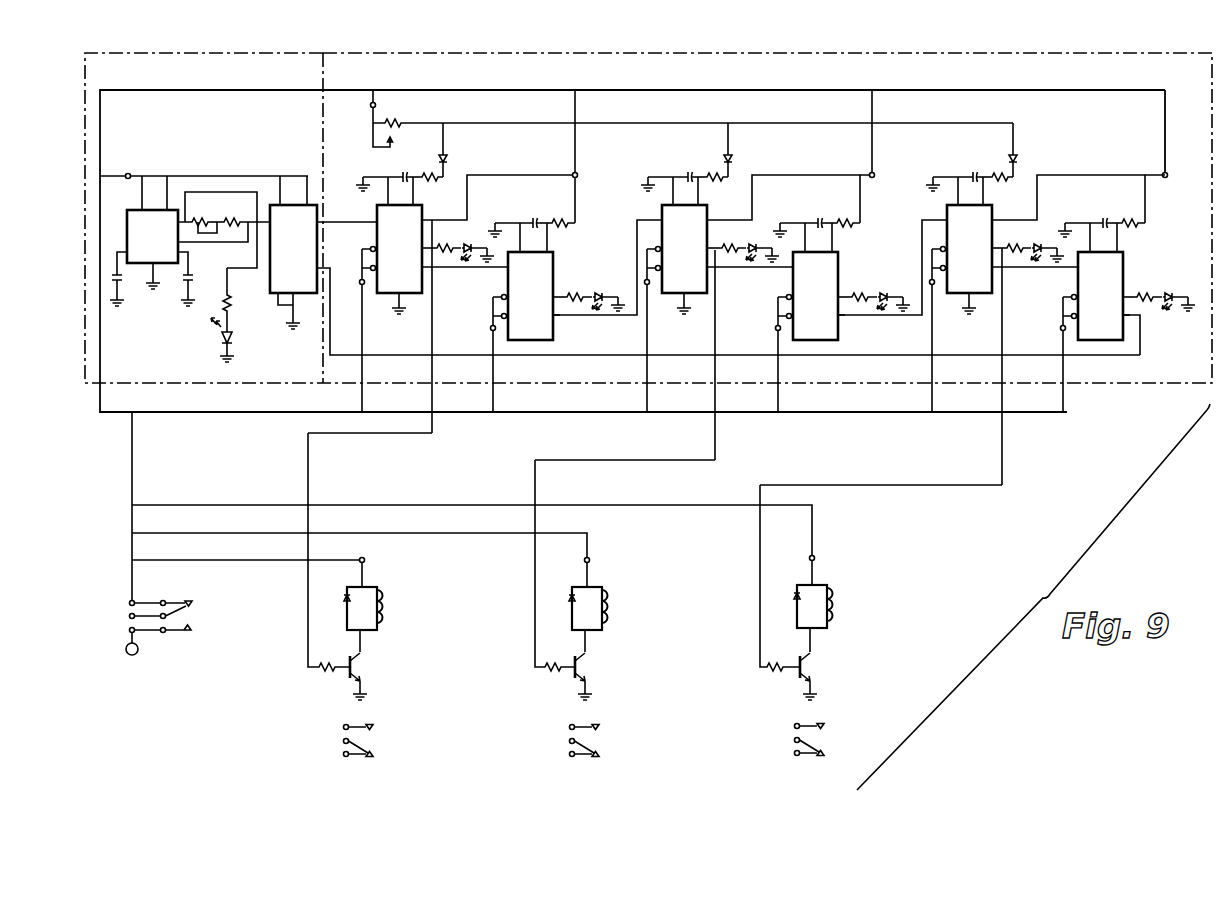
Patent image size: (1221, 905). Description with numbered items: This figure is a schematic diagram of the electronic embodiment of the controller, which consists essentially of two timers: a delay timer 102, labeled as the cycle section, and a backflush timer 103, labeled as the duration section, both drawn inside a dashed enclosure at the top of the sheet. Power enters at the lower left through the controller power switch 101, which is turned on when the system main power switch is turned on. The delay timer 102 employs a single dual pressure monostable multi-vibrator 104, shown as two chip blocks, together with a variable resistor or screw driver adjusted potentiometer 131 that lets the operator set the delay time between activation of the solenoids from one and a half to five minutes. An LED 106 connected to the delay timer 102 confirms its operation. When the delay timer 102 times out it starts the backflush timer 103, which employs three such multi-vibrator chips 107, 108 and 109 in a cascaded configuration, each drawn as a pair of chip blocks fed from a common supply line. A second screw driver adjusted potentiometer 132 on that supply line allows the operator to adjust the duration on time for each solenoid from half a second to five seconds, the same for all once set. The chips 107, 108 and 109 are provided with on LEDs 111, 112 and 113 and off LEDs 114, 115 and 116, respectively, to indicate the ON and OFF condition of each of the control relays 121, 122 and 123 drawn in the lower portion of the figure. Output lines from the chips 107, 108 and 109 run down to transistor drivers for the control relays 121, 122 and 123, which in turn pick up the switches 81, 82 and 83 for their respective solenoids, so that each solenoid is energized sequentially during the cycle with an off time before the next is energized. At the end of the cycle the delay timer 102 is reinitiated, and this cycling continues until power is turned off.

The delay timer 102 is at (228, 53).
The backflush timer 103 is at (452, 53).
The dual pressure monostable multi-vibrator 104 is at (135, 268).
The LED 106 is at (217, 344).
The multi-vibrator chip 107 is at (380, 295).
The multi-vibrator chip 108 is at (665, 295).
The multi-vibrator chip 109 is at (950, 295).
The LED 111 is at (468, 240).
The LED 112 is at (753, 240).
The LED 113 is at (1040, 240).
The LED 114 is at (598, 290).
The LED 115 is at (883, 290).
The LED 116 is at (1168, 290).
The control relay 121 is at (383, 587).
The control relay 122 is at (608, 587).
The control relay 123 is at (832, 585).
The switch 81 is at (373, 732).
The switch 82 is at (600, 732).
The switch 83 is at (823, 732).
The controller power switch 101 is at (172, 652).
The potentiometer 131 is at (198, 220).
The potentiometer 132 is at (393, 119).